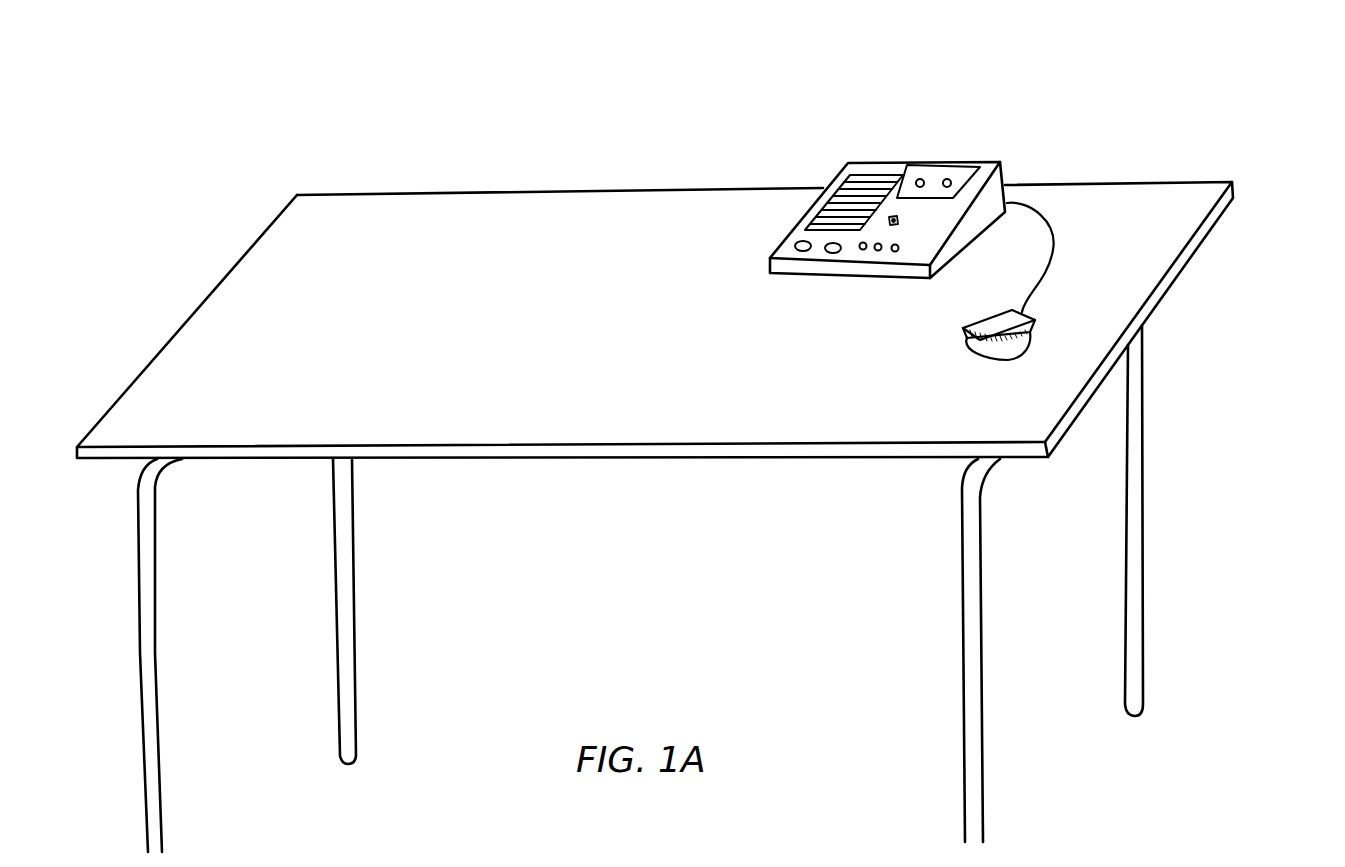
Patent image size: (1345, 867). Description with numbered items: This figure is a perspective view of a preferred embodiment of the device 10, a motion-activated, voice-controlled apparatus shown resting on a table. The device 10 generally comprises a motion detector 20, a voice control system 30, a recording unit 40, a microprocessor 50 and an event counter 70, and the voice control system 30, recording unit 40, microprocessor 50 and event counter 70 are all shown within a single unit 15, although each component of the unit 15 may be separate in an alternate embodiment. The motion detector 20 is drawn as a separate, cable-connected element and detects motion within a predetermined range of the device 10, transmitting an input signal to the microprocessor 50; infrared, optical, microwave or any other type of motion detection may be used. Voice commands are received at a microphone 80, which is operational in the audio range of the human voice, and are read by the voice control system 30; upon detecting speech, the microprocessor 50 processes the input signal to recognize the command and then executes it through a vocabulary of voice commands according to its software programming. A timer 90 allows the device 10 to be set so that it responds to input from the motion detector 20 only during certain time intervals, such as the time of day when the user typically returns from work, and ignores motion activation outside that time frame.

The device 10 is at (1232, 73).
The unit 15 is at (977, 152).
The motion detector 20 is at (1035, 330).
The voice control system 30 is at (882, 173).
The recording unit 40 is at (993, 183).
The microprocessor 50 is at (863, 162).
The event counter 70 is at (832, 253).
The microphone 80 is at (897, 223).
The timer 90 is at (801, 251).